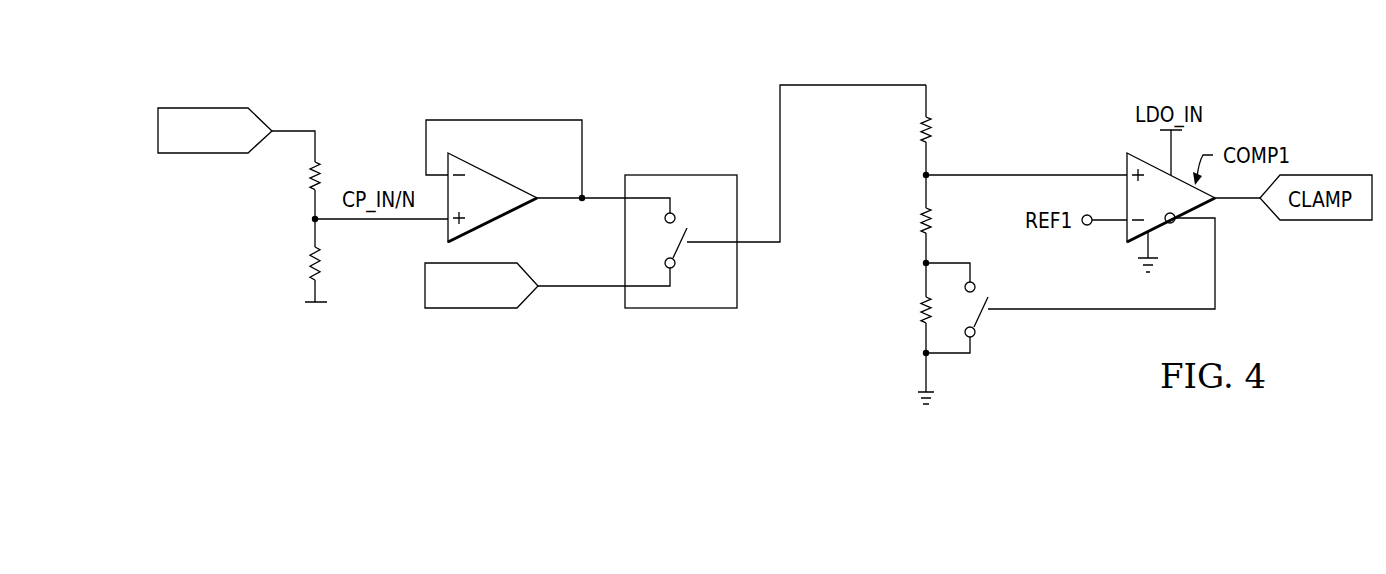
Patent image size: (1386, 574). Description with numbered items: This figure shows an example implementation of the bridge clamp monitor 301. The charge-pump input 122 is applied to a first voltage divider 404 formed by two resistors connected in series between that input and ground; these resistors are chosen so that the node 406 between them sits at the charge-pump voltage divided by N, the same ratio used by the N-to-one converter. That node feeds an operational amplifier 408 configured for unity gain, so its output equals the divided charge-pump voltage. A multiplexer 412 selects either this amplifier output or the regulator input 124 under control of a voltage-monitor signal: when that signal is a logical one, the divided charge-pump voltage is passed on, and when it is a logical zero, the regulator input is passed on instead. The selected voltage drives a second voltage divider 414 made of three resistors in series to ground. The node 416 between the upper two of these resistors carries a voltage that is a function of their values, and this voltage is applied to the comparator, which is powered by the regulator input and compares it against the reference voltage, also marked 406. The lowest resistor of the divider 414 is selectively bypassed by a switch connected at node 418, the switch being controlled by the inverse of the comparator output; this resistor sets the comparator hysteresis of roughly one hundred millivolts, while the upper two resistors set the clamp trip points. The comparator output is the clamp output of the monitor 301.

The bridge clamp monitor 301 is at (1027, 74).
The charge pump input CP_IN 122 is at (158, 122).
The resistor divider R7/R8 404 is at (263, 165).
The voltage reference 406 is at (319, 223).
The operational amplifier 408 is at (517, 152).
The multiplexer 412 is at (625, 253).
The LDO input LDO_IN 124 is at (470, 309).
The second voltage divider 414 is at (867, 108).
The node 416 is at (932, 171).
The switched divider node 418 is at (932, 259).